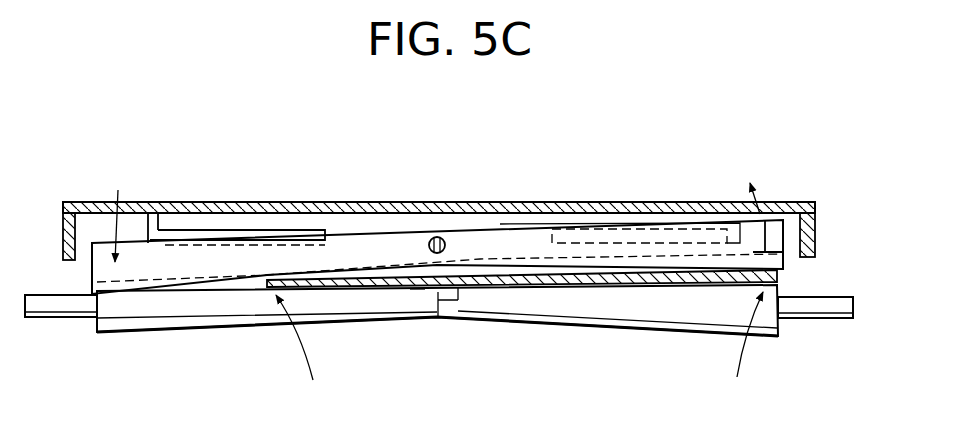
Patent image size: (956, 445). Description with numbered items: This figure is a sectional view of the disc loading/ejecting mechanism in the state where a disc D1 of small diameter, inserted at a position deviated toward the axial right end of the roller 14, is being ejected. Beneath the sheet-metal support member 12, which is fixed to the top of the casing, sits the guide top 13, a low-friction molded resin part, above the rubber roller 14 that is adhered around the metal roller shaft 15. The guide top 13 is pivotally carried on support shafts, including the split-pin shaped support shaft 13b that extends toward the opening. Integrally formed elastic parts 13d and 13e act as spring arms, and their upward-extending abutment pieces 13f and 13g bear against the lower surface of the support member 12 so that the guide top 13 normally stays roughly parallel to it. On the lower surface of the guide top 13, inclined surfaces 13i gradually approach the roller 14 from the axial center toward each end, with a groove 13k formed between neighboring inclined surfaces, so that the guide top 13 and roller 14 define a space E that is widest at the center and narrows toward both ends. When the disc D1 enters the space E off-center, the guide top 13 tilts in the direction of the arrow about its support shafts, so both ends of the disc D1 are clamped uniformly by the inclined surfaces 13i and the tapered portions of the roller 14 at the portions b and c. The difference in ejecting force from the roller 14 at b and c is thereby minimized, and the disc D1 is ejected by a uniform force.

The support member 12 is at (552, 203).
The guide top 13 is at (373, 247).
The abutment piece 13g is at (166, 214).
The elastic part 13e is at (257, 233).
The support shaft 13b is at (447, 238).
The elastic part 13d is at (621, 237).
The abutment piece 13f is at (722, 218).
The roller 14 is at (507, 310).
The inclined surface 13i is at (158, 290).
The groove 13k is at (218, 290).
The roller shaft 15 is at (823, 310).
The disc having a small diameter D1 is at (458, 292).
The space E is at (417, 290).
The portion c is at (299, 353).
The portion b is at (744, 350).